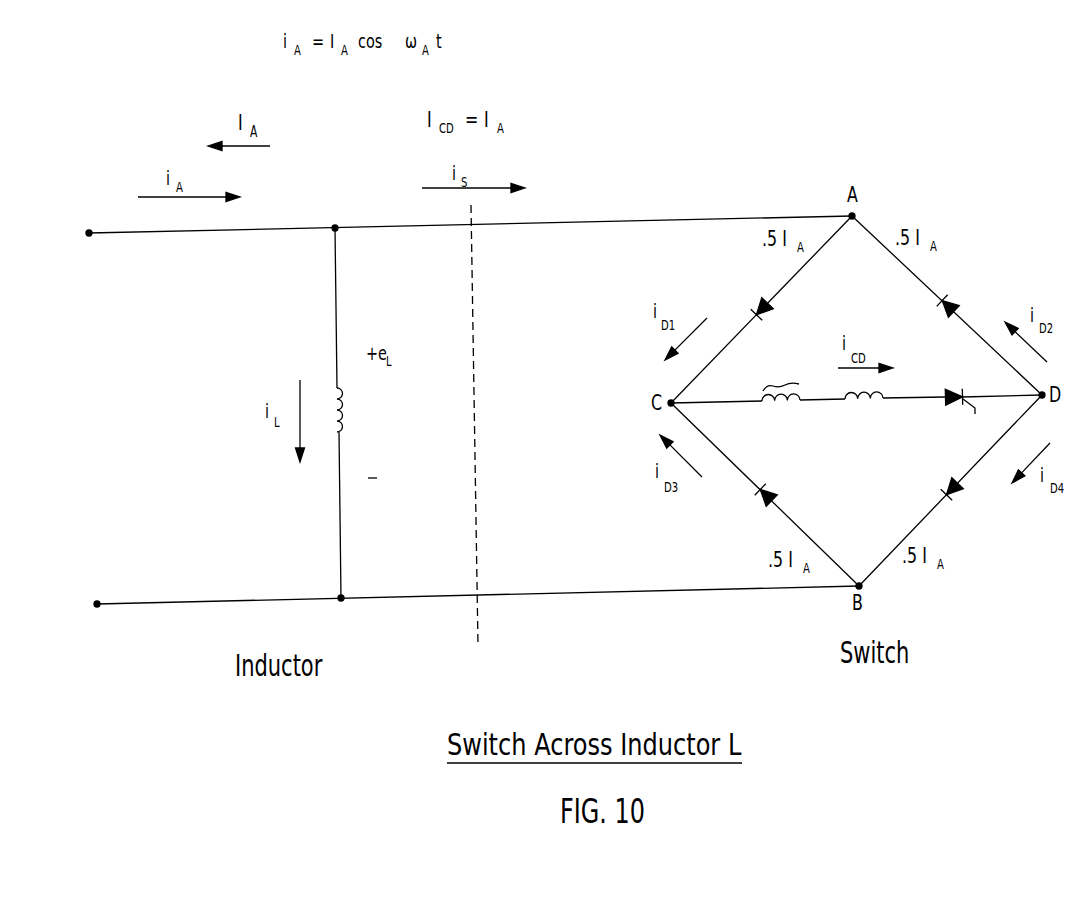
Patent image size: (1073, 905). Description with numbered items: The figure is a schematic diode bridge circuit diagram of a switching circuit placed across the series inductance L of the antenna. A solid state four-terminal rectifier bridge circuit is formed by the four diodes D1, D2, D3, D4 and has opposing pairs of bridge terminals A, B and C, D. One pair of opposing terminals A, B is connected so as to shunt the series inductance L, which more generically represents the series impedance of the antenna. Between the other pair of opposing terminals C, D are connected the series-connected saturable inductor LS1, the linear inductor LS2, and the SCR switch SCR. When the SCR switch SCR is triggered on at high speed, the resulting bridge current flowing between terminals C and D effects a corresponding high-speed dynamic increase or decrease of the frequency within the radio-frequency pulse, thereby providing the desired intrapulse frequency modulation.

The series inductance L is at (355, 410).
The diode D1 is at (752, 298).
The diode D2 is at (962, 296).
The diode D3 is at (755, 506).
The diode D4 is at (964, 501).
The saturable inductor LS1 is at (781, 409).
The linear inductor LS2 is at (864, 414).
The SCR switch SCR is at (956, 412).